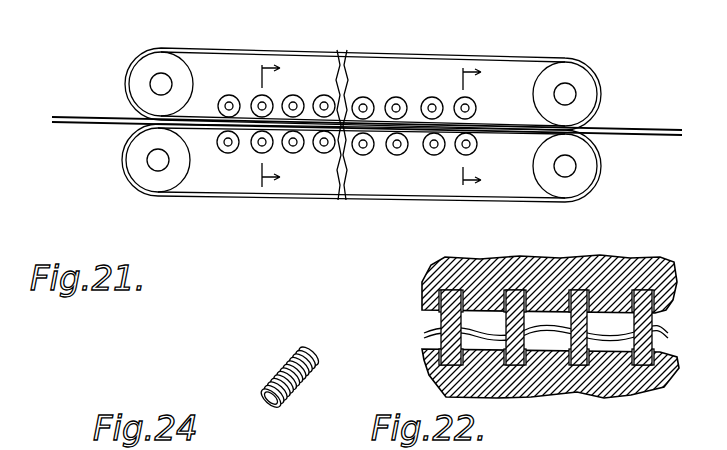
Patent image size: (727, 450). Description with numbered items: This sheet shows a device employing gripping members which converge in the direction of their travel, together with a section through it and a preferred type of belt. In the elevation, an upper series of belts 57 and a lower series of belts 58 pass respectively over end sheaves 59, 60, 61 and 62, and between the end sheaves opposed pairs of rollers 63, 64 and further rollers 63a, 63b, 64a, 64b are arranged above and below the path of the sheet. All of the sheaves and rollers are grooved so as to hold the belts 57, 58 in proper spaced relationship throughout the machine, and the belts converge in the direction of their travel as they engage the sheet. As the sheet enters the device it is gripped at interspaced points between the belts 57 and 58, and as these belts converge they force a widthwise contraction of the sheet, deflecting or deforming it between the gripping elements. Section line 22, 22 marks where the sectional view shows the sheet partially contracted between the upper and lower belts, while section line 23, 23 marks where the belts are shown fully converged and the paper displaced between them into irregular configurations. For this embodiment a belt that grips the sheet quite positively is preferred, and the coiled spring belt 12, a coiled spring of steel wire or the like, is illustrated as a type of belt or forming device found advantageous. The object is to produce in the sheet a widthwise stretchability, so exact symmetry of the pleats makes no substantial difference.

In FIG. 24, the coiled spring belt 12 is at (285, 354).
In FIG. 21, the section line 22 22 is at (286, 128).
In FIG. 21, the section line 23 23 is at (489, 128).
In FIG. 21, the upper series of belts 57 is at (410, 56).
In FIG. 22, the upper series of belts 57 is at (575, 305).
In FIG. 21, the lower series of belts 58 is at (243, 133).
In FIG. 22, the lower series of belts 58 is at (588, 366).
In FIG. 21, the end sheave 59 is at (135, 162).
In FIG. 21, the end sheave 60 is at (587, 178).
In FIG. 21, the end sheave 61 is at (585, 96).
In FIG. 21, the end sheave 62 is at (140, 65).
In FIG. 21, the roller 63 is at (252, 94).
In FIG. 22, the roller 63 is at (531, 273).
In FIG. 21, the roller 63a is at (384, 84).
In FIG. 21, the roller 63b is at (484, 97).
In FIG. 21, the roller 64 is at (253, 152).
In FIG. 22, the roller 64 is at (536, 397).
In FIG. 21, the roller 64a is at (396, 154).
In FIG. 21, the roller 64b is at (477, 146).